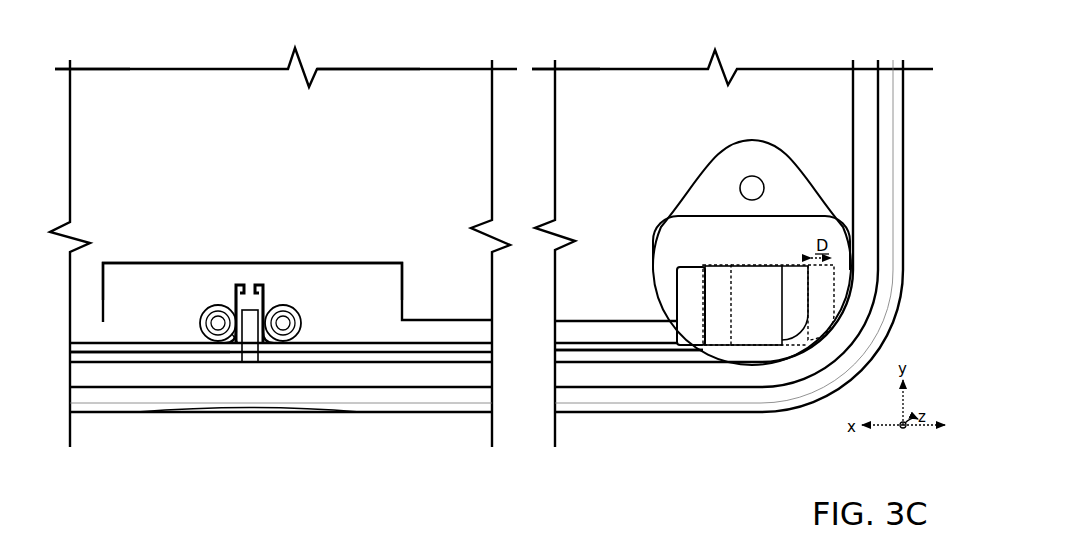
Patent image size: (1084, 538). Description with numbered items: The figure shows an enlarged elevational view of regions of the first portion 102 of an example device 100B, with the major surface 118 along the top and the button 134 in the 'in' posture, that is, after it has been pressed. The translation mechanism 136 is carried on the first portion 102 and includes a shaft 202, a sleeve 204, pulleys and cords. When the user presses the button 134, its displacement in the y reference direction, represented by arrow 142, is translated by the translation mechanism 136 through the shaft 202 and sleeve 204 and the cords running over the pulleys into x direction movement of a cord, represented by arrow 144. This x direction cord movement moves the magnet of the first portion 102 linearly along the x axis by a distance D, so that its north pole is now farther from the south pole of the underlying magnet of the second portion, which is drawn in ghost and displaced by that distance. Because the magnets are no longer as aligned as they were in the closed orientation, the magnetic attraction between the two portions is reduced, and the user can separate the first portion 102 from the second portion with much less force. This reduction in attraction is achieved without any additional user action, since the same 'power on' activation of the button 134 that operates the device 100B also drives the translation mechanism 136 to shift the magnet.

The device 100B is at (234, 48).
The major surface 118 is at (248, 112).
The translation mechanism 136 is at (200, 256).
The sleeve 204 is at (253, 285).
The arrow 142 is at (249, 290).
The arrow 144 is at (397, 337).
The shaft 202 is at (251, 355).
The button 134 is at (290, 414).
The first portion 102 is at (616, 66).